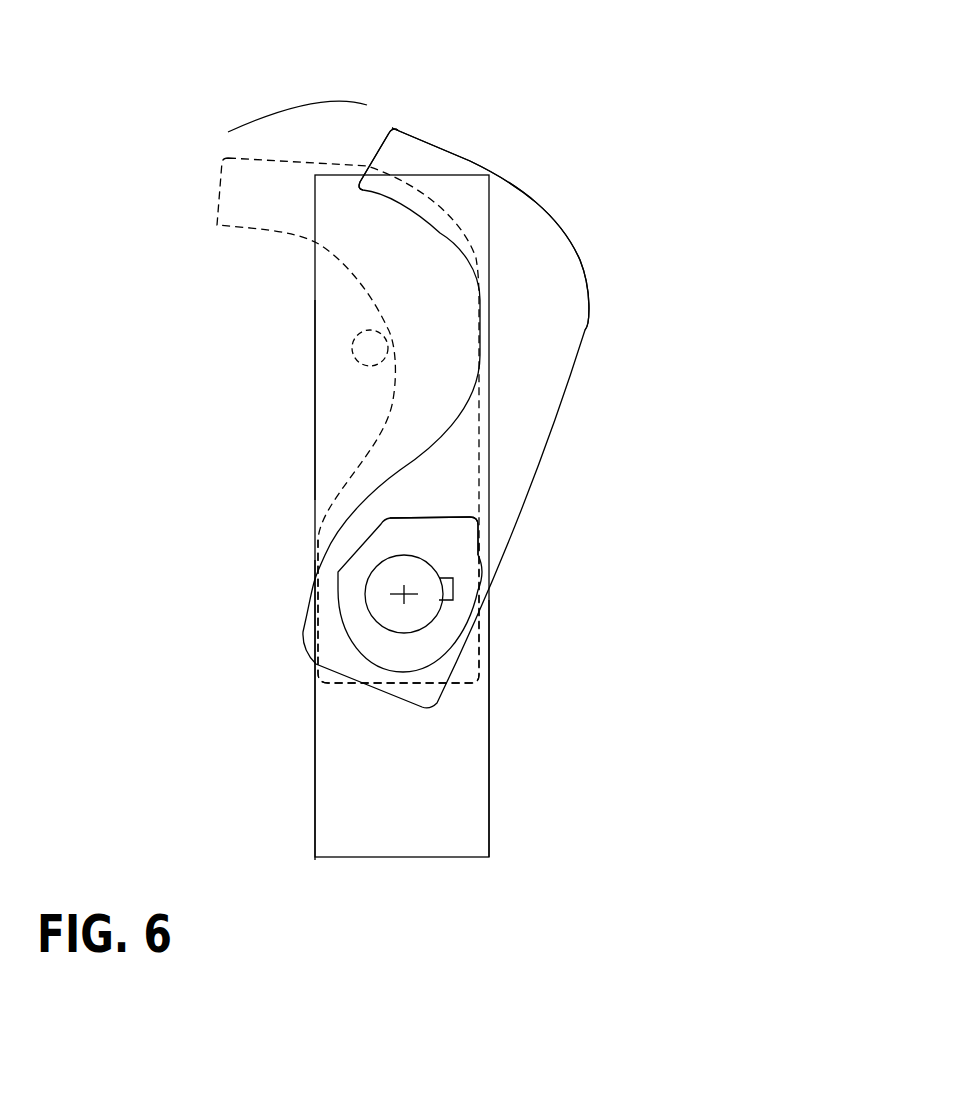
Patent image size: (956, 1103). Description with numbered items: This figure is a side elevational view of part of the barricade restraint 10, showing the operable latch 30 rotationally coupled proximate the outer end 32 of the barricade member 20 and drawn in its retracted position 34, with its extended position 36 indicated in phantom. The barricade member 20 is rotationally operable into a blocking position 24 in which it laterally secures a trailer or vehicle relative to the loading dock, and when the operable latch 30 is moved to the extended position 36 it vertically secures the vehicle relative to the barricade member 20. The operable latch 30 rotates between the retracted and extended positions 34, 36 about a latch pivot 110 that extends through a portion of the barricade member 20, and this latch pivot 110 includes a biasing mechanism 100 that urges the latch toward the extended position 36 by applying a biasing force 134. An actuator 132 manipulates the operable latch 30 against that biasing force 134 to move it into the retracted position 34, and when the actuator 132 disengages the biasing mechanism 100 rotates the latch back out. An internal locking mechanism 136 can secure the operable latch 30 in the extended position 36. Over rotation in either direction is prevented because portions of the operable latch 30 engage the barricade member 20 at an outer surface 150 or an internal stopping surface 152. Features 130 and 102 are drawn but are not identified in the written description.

The barricade restraint 10 is at (158, 509).
The barricade member 20 is at (453, 780).
The blocking position 24 is at (300, 760).
The operable latch 30 is at (598, 128).
The outer end 32 is at (290, 400).
The retracted position 34 is at (596, 246).
The extended position 36 is at (190, 201).
The biasing mechanism 100 is at (324, 580).
The boss 102 is at (424, 556).
The latch pivot 110 is at (423, 612).
The pad end 130 is at (382, 143).
The actuator 132 is at (305, 645).
The biasing force 134 is at (277, 107).
The internal locking mechanism 136 is at (452, 565).
The outer surface 150 is at (490, 702).
The internal stopping surface 152 is at (352, 338).